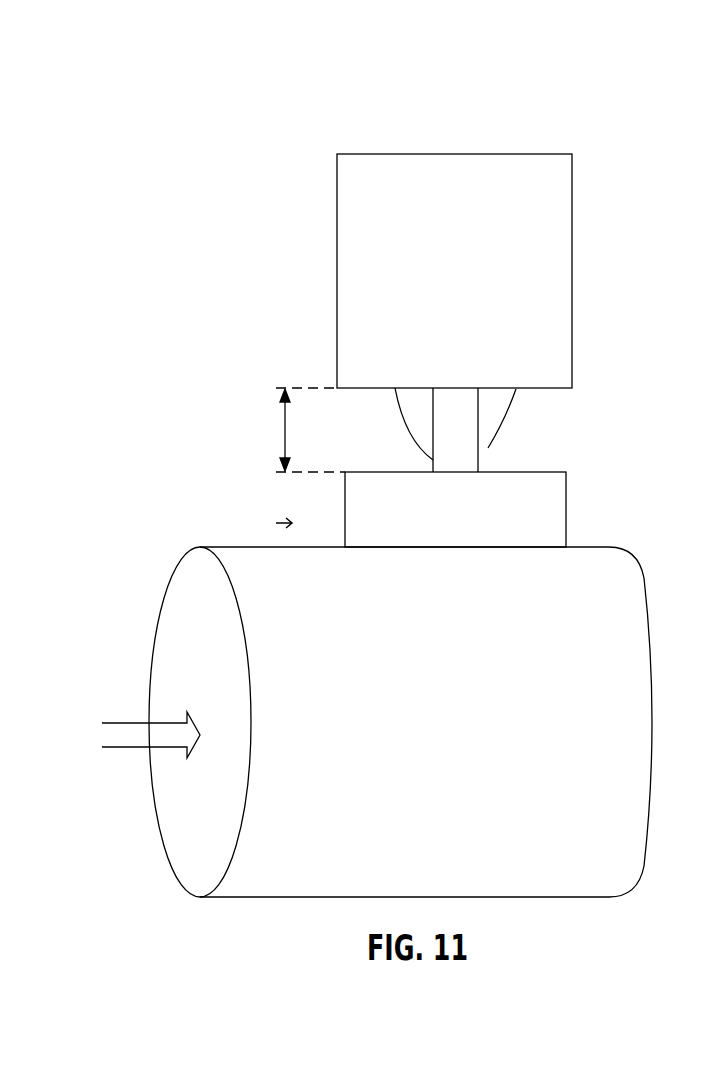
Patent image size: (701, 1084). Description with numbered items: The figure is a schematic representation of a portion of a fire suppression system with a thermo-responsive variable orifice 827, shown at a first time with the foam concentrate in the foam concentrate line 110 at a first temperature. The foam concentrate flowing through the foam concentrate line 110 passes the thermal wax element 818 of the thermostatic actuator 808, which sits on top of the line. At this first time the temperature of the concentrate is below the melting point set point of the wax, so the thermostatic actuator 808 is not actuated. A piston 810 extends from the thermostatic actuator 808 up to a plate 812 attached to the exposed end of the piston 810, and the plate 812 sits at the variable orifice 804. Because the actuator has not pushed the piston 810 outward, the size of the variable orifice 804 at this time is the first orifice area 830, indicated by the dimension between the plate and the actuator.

The thermo-responsive variable orifice 827 is at (262, 124).
The plate 812 is at (542, 197).
The piston 810 is at (452, 452).
The variable orifice 804 is at (498, 408).
The thermostatic actuator 808 is at (273, 368).
The orifice area 830 is at (235, 430).
The thermal wax element 818 is at (543, 524).
The foam concentrate line 110 is at (377, 722).